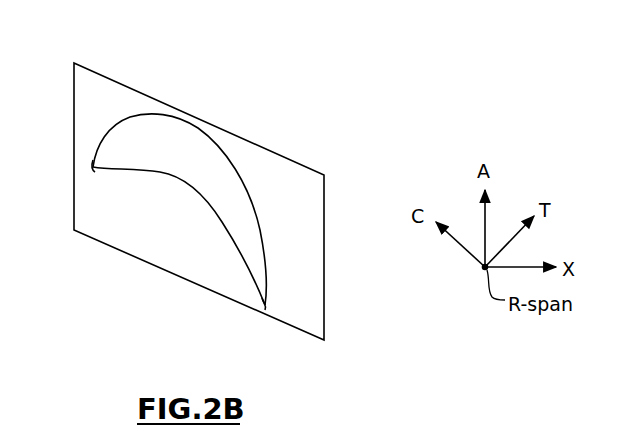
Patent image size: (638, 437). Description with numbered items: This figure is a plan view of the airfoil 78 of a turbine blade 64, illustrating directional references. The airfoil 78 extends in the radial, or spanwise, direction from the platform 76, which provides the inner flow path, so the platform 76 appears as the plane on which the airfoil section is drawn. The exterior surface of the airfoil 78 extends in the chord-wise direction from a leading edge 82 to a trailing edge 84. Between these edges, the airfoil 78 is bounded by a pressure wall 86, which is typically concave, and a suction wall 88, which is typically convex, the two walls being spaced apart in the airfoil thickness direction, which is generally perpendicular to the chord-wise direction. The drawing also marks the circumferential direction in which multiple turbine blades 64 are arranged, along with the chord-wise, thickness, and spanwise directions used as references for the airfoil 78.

The turbine blade 64 is at (179, 203).
The platform 76 is at (129, 84).
The airfoil 78 is at (153, 229).
The leading edge 82 is at (95, 170).
The trailing edge 84 is at (265, 305).
The pressure wall 86 is at (188, 184).
The suction wall 88 is at (198, 129).